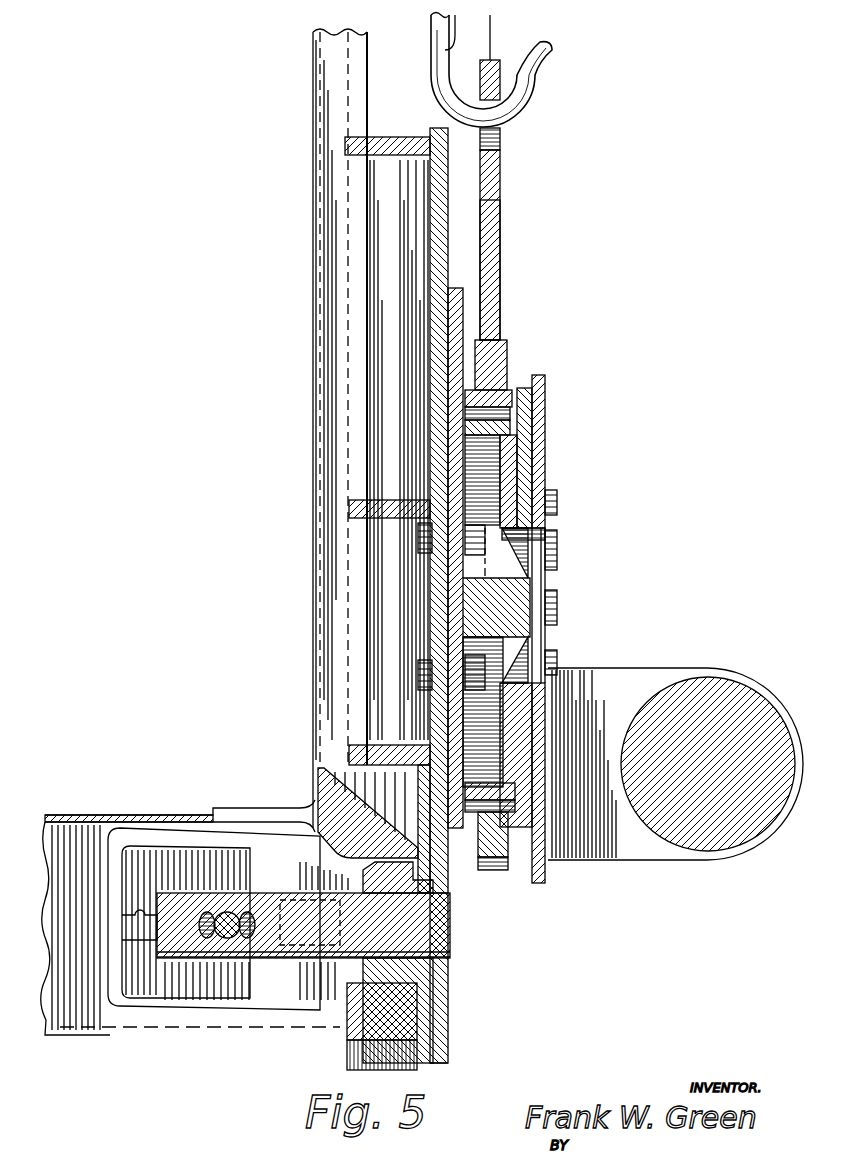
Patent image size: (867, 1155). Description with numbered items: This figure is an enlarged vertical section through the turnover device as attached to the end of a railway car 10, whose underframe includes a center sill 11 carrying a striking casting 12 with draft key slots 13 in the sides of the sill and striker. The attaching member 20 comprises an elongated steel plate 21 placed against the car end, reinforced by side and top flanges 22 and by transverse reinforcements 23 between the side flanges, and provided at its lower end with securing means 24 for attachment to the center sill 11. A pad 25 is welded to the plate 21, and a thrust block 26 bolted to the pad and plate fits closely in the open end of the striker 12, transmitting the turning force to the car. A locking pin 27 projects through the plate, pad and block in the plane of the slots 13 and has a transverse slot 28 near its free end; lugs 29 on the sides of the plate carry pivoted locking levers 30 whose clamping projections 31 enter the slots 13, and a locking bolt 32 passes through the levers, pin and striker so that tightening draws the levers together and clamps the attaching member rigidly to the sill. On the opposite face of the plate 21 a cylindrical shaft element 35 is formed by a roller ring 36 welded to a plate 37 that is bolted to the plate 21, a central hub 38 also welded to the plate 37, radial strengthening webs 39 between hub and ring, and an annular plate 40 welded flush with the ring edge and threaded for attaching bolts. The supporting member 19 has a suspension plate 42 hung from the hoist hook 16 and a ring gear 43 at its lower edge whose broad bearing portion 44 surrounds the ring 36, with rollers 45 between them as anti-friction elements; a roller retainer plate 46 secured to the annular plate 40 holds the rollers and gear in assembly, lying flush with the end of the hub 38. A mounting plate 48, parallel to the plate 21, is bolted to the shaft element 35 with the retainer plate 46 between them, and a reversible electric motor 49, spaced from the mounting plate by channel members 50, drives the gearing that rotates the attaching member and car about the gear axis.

The railway car body 10 is at (306, 366).
The center sill 11 is at (100, 815).
The striking casting 12 is at (160, 830).
The draft key slots 13 is at (140, 913).
The hook 16 is at (540, 82).
The supporting member 19 is at (507, 277).
The attaching member 20 is at (416, 130).
The elongated steel plate 21 is at (445, 1018).
The side and top flanges 22 is at (382, 137).
The transverse reinforcements 23 is at (395, 504).
The securing means 24 is at (277, 888).
The pad 25 is at (448, 893).
The thrust block 26 is at (368, 870).
The locking pin 27 is at (450, 940).
The transverse slot 28 is at (213, 915).
The lugs 29 is at (450, 955).
The locking levers 30 is at (237, 945).
The clamping projections 31 is at (268, 972).
The locking bolt 32 is at (215, 945).
The shaft element 35 is at (520, 388).
The roller ring 36 is at (505, 430).
The plate 37 is at (458, 288).
The hub 38 is at (525, 636).
The strengthening webs 39 is at (505, 568).
The annular plate 40 is at (510, 480).
The suspension plate 42 is at (500, 210).
The ring gear 43 is at (500, 870).
The bearing portion 44 is at (512, 825).
The rollers 45 is at (470, 828).
The roller retainer plate 46 is at (525, 462).
The mounting plate 48 is at (545, 395).
The reversible electric motor 49 is at (745, 690).
The channel members 50 is at (585, 672).